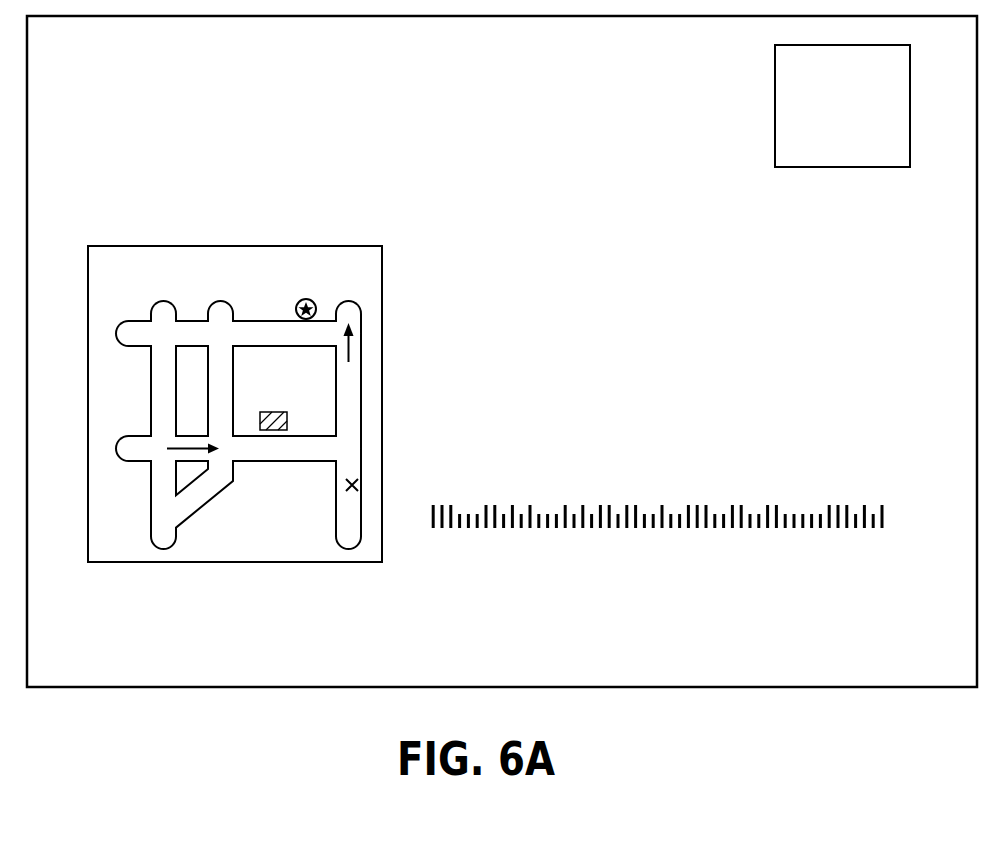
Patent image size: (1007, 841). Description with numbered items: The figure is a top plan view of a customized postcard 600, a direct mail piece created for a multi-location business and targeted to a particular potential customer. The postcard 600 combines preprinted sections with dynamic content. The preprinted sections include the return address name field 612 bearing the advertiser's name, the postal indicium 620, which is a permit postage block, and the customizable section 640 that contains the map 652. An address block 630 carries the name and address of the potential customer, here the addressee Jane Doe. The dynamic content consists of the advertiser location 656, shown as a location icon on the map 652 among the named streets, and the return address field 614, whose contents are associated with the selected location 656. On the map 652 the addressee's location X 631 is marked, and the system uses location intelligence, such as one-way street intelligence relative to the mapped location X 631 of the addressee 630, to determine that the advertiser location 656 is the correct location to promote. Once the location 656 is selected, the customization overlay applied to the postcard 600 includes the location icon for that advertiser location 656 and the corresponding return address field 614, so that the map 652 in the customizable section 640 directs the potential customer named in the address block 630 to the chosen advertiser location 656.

The customized postcard 600 is at (115, 628).
The return address name field 612 is at (435, 68).
The return address field 614 is at (285, 182).
The postal indicium 620 is at (775, 130).
The address block 630 is at (645, 375).
The location X 631 is at (348, 473).
The customizable section 640 is at (327, 565).
The map 652 is at (168, 302).
The advertiser location 656 is at (317, 305).